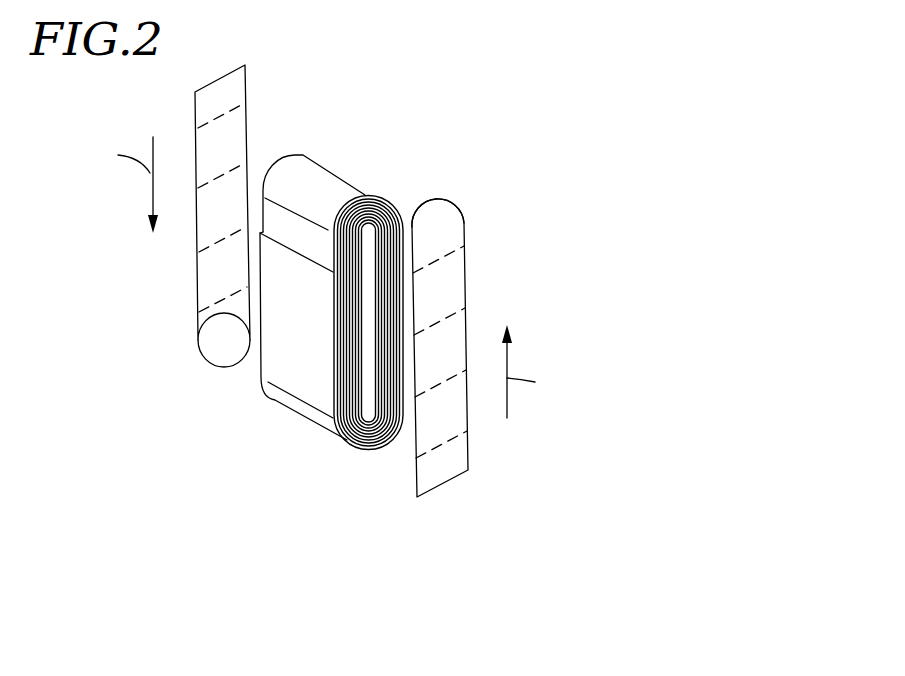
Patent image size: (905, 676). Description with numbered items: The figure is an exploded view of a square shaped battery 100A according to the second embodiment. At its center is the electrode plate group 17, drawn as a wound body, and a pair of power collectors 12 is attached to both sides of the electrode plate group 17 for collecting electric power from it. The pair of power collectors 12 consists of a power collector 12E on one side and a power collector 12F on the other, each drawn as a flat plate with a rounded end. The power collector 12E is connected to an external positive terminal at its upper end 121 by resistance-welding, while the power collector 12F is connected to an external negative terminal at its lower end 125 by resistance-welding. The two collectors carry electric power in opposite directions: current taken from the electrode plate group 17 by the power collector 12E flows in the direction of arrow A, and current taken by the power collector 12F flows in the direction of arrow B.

The square shaped battery 100A is at (457, 65).
The electrode plate group 17 is at (320, 130).
The pair of power collectors 12 is at (540, 580).
The power collector 12F is at (227, 392).
The power collector 12E is at (466, 504).
The lower end 125 is at (222, 348).
The upper end 121 is at (463, 233).